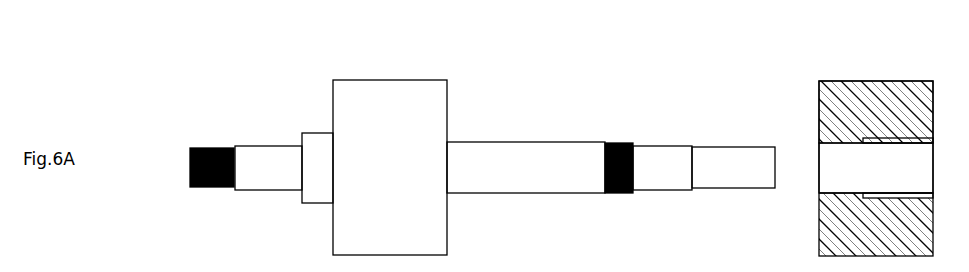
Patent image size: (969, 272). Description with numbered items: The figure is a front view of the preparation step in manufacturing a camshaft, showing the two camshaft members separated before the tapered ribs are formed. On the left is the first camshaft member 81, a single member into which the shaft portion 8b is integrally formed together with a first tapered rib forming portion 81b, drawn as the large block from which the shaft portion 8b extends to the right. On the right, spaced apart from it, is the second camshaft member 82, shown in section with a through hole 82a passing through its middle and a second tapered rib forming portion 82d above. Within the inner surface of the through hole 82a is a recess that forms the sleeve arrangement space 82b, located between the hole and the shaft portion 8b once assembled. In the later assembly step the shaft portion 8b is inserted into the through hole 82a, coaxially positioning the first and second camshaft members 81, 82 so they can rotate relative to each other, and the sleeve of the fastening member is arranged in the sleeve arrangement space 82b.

The shaft portion 8b is at (506, 150).
The first camshaft member 81 is at (258, 121).
The first tapered rib forming portion 81b is at (393, 93).
The second camshaft member 82 is at (734, 136).
The through hole 82a is at (876, 178).
The sleeve arrangement space 82b is at (888, 195).
The second tapered rib forming portion 82d is at (863, 93).